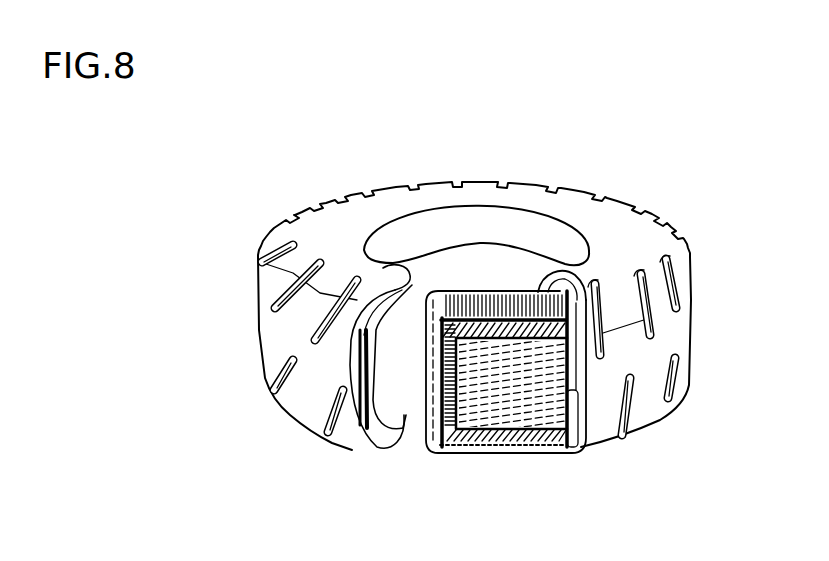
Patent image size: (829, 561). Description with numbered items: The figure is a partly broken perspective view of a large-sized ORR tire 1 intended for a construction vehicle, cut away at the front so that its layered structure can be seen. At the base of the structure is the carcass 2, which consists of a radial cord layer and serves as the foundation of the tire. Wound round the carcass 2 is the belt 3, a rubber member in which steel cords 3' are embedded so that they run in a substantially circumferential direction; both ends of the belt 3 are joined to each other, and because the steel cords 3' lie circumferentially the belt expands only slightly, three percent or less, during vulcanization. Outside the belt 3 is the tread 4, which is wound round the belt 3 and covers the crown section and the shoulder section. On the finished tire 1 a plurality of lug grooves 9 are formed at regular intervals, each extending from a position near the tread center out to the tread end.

The ORR tire 1 is at (238, 218).
The carcass 2 is at (425, 448).
The belt 3 is at (503, 419).
The steel cords 3' is at (504, 268).
The tread 4 is at (595, 413).
The lug grooves 9 is at (273, 376).